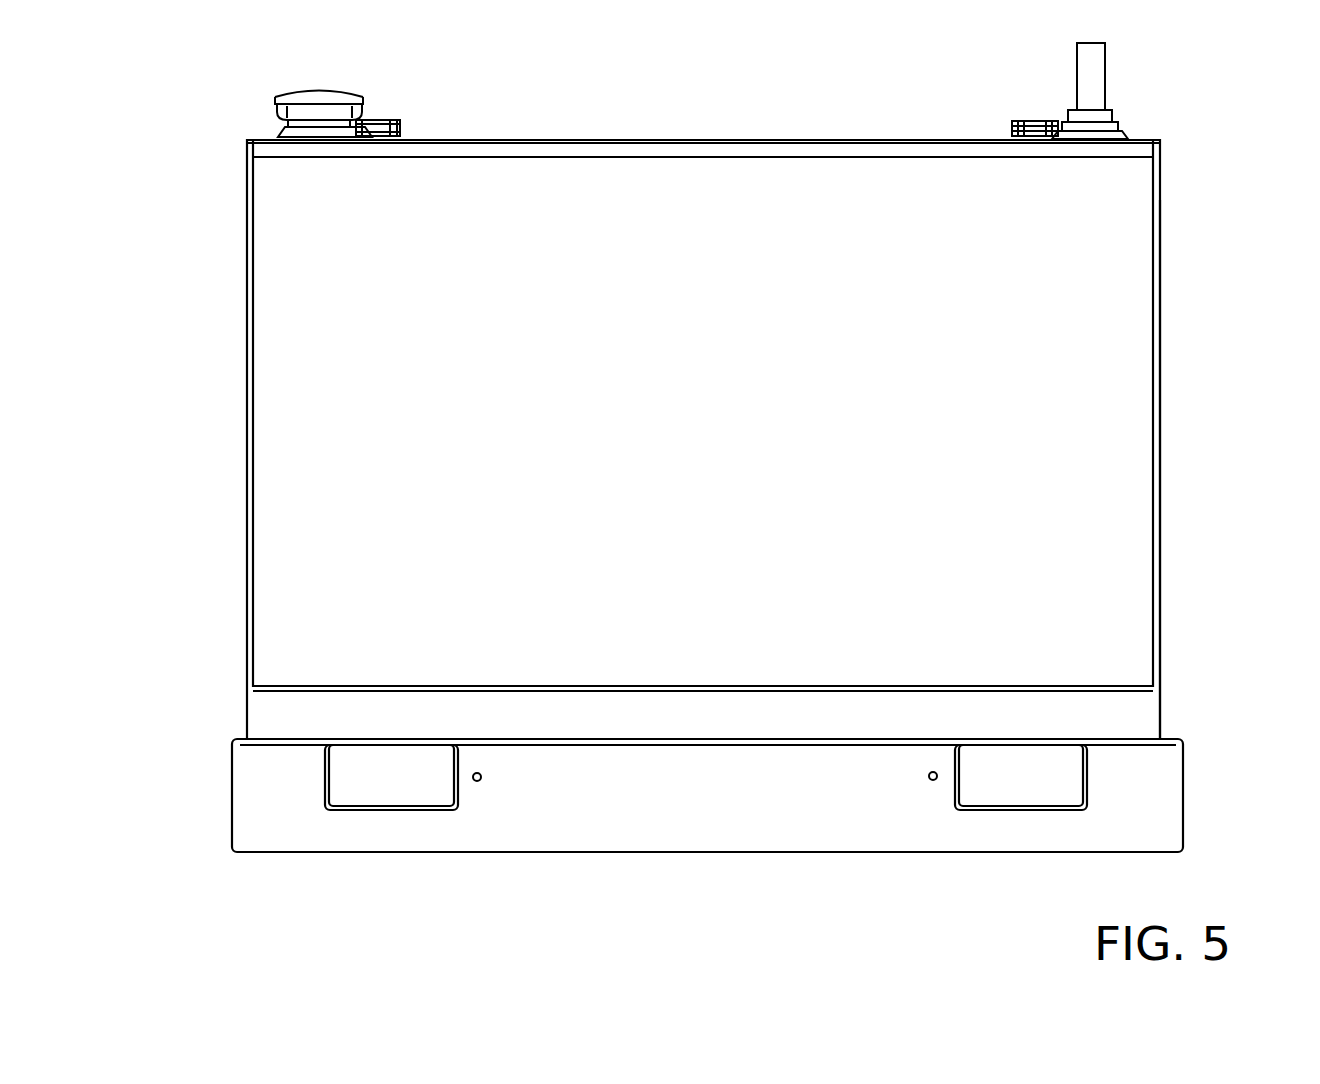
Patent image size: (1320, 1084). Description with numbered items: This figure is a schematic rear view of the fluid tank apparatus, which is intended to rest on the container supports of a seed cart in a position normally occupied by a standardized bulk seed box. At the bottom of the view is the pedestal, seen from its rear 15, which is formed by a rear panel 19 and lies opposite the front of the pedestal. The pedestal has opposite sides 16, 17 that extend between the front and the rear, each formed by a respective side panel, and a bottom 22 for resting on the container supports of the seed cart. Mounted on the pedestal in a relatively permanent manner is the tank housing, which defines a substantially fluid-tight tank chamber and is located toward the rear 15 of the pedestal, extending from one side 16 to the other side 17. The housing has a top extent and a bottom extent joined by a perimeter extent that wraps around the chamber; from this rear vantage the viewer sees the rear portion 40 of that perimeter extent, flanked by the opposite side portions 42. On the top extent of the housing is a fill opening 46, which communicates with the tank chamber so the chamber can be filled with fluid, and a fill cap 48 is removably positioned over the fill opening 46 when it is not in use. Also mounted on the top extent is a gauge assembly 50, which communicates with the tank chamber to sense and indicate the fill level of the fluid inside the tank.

The rear 15 is at (677, 873).
The side 16 is at (1200, 821).
The side 17 is at (214, 815).
The rear panel 19 is at (573, 810).
The bottom 22 is at (802, 861).
The rear portion 40 is at (1120, 581).
The side portion 42 is at (1157, 498).
The fill opening 46 is at (387, 111).
The fill cap 48 is at (352, 93).
The gauge assembly 50 is at (1127, 105).